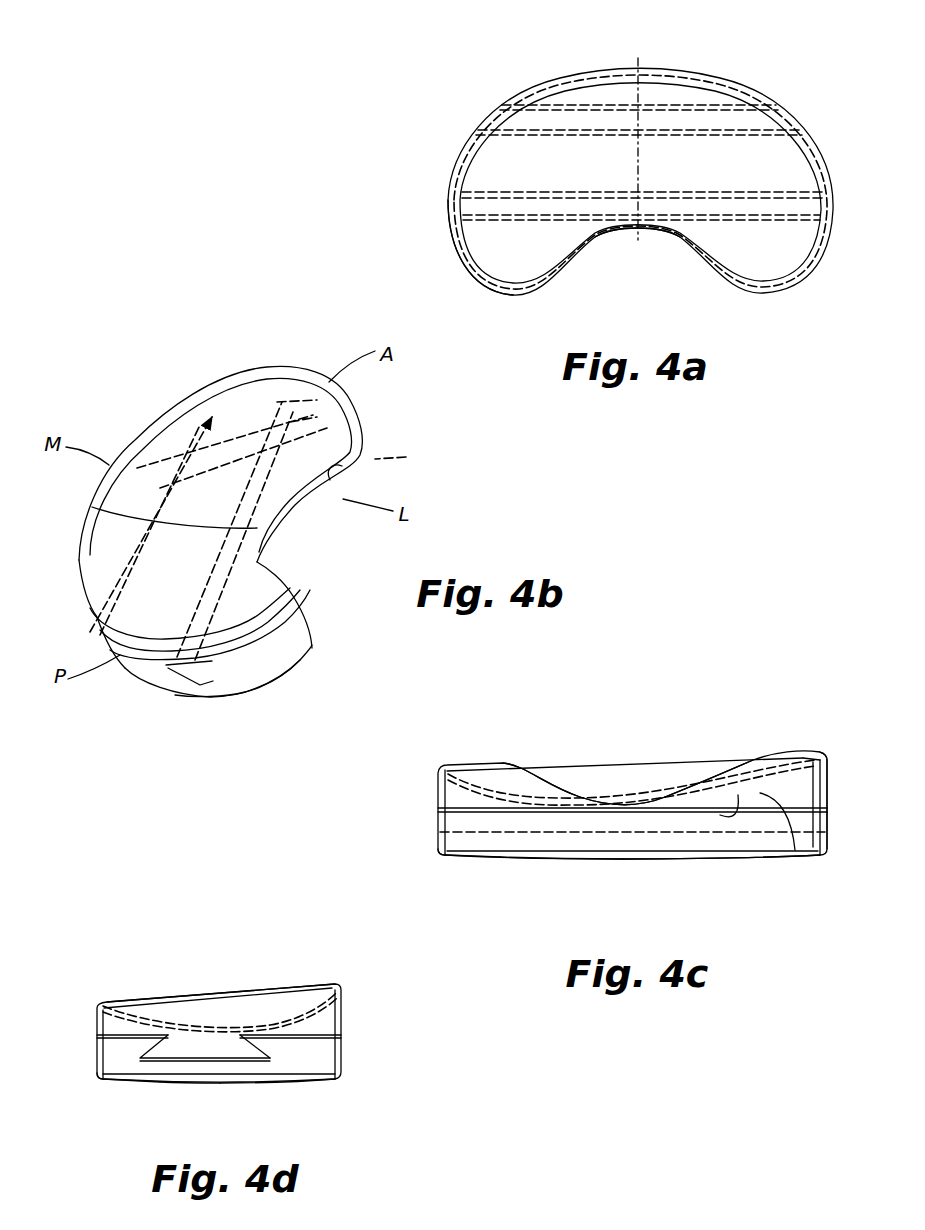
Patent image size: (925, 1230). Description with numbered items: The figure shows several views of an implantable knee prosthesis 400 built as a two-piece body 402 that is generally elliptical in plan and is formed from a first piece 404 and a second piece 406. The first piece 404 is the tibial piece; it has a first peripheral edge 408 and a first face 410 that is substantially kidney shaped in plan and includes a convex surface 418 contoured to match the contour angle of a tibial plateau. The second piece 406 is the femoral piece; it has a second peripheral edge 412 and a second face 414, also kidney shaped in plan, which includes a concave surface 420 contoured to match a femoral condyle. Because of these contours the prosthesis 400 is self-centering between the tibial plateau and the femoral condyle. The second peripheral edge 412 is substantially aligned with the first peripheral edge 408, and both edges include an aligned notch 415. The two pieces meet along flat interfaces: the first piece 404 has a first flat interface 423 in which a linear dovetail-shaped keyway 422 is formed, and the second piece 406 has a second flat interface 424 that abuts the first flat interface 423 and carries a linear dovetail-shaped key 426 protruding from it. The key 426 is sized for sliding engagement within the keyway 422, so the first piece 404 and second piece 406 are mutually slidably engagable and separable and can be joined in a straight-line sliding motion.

In FIG. 4A, the implantable knee prosthesis 400 is at (733, 63).
In FIG. 4B, the implantable knee prosthesis 400 is at (168, 377).
In FIG. 4C, the implantable knee prosthesis 400 is at (773, 708).
In FIG. 4D, the implantable knee prosthesis 400 is at (145, 945).
In FIG. 4A, the two-piece body 402 is at (600, 65).
In FIG. 4B, the two-piece body 402 is at (286, 365).
In FIG. 4C, the two-piece body 402 is at (436, 762).
In FIG. 4D, the two-piece body 402 is at (339, 982).
In FIG. 4B, the first piece 404 is at (260, 698).
In FIG. 4C, the first piece 404 is at (440, 855).
In FIG. 4D, the first piece 404 is at (97, 1080).
In FIG. 4A, the second piece 406 is at (462, 258).
In FIG. 4B, the second piece 406 is at (289, 591).
In FIG. 4C, the second piece 406 is at (801, 758).
In FIG. 4D, the second piece 406 is at (97, 1005).
In FIG. 4B, the first peripheral edge 408 is at (231, 684).
In FIG. 4C, the first peripheral edge 408 is at (440, 832).
In FIG. 4C, the first face 410 is at (618, 861).
In FIG. 4D, the first face 410 is at (218, 1083).
In FIG. 4B, the second peripheral edge 412 is at (293, 623).
In FIG. 4C, the second peripheral edge 412 is at (828, 780).
In FIG. 4A, the second face 414 is at (487, 276).
In FIG. 4B, the second face 414 is at (224, 375).
In FIG. 4C, the second face 414 is at (655, 773).
In FIG. 4D, the second face 414 is at (283, 982).
In FIG. 4A, the notch 415 is at (651, 231).
In FIG. 4B, the notch 415 is at (281, 535).
In FIG. 4C, the convex surface 418 is at (590, 861).
In FIG. 4D, the convex surface 418 is at (205, 1083).
In FIG. 4C, the concave surface 420 is at (535, 790).
In FIG. 4D, the concave surface 420 is at (178, 1006).
In FIG. 4A, the keyway 422 is at (797, 221).
In FIG. 4B, the keyway 422 is at (181, 734).
In FIG. 4D, the keyway 422 is at (270, 1055).
In FIG. 4B, the first flat interface 423 is at (354, 465).
In FIG. 4C, the first flat interface 423 is at (795, 850).
In FIG. 4D, the first flat interface 423 is at (118, 1035).
In FIG. 4B, the second flat interface 424 is at (296, 648).
In FIG. 4C, the second flat interface 424 is at (737, 808).
In FIG. 4D, the second flat interface 424 is at (330, 1037).
In FIG. 4A, the key 426 is at (740, 225).
In FIG. 4B, the key 426 is at (124, 673).
In FIG. 4D, the key 426 is at (175, 1048).